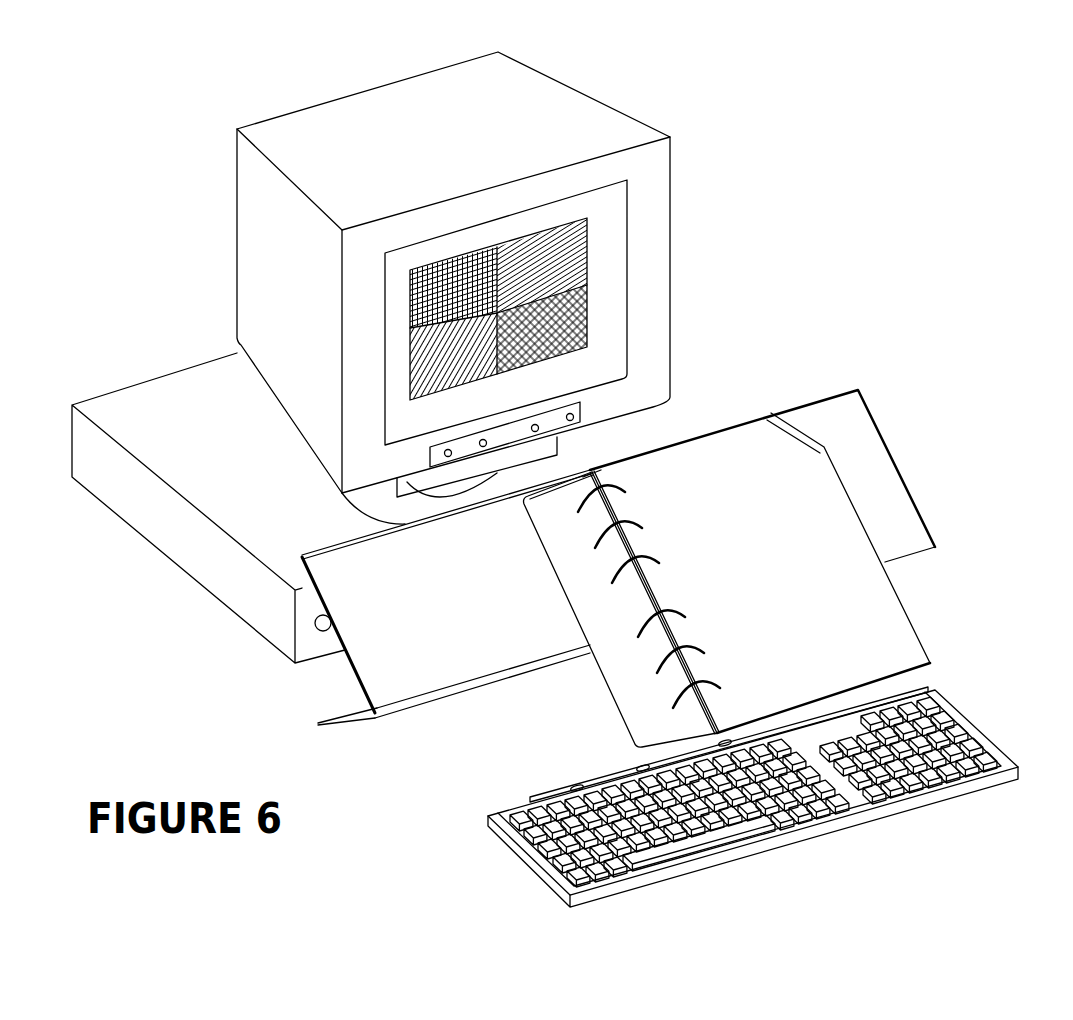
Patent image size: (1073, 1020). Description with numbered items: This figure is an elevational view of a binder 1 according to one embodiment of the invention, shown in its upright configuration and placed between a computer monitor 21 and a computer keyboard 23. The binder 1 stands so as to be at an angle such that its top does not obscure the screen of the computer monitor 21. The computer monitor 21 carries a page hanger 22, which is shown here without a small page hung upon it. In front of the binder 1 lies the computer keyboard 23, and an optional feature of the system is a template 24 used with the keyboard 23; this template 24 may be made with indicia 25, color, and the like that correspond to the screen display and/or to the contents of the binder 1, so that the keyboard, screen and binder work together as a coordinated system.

The binder 1 is at (841, 358).
The computer monitor 21 is at (672, 185).
The page hanger 22 is at (603, 397).
The computer keyboard 23 is at (937, 690).
The template 24 is at (542, 797).
The indicia 25 is at (612, 738).